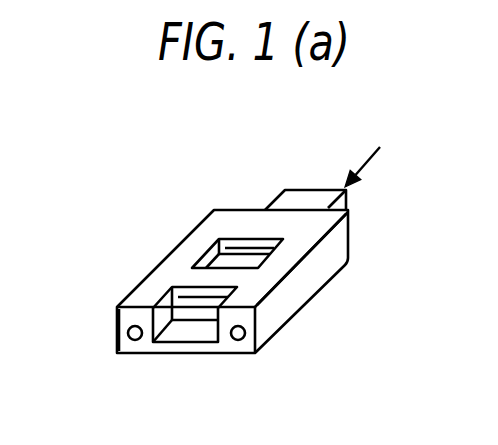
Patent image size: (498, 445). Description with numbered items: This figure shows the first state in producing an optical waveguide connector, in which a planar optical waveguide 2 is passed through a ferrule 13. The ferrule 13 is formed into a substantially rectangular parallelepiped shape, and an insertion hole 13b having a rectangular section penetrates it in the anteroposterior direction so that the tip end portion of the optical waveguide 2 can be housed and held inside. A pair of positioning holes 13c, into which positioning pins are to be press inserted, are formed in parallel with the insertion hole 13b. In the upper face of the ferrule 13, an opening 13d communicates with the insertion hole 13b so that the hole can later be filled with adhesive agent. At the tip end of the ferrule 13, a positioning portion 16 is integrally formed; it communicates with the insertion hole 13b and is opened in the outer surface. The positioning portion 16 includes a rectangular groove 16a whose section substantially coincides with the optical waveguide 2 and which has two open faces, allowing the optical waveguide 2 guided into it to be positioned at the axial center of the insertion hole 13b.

The optical waveguide 2 is at (295, 202).
The ferrule 13 is at (188, 237).
The insertion hole 13b is at (232, 242).
The positioning holes 13c is at (128, 333).
The opening 13d is at (270, 255).
The positioning portion 16 is at (132, 276).
The rectangular groove 16a is at (181, 329).